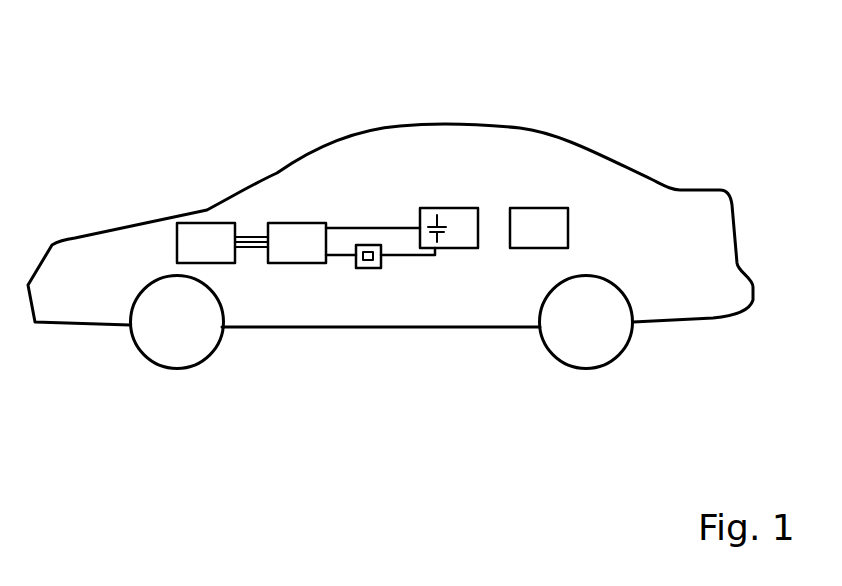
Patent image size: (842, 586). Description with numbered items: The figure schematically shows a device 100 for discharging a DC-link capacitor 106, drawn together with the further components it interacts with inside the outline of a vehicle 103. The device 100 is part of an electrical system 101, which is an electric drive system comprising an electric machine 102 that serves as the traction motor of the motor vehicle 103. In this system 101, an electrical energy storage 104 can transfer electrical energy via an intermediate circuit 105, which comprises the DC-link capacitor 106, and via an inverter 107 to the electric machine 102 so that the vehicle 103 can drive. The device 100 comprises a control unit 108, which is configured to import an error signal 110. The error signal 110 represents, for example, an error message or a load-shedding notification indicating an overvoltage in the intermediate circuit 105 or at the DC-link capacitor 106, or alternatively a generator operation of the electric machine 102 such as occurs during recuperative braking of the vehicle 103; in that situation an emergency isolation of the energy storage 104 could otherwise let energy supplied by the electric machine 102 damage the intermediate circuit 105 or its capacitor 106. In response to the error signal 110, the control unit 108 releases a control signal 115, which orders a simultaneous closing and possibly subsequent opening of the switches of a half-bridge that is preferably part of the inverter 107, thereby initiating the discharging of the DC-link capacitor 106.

The device 100 is at (375, 268).
The electrical system 101 is at (391, 189).
The electric machine 102 is at (207, 223).
The vehicle 103 is at (245, 327).
The electrical energy storage 104 is at (527, 248).
The intermediate circuit 105 is at (467, 208).
The DC-link capacitor 106 is at (440, 221).
The inverter 107 is at (277, 223).
The control unit 108 is at (368, 245).
The error signal 110 is at (408, 257).
The control signal 115 is at (342, 258).